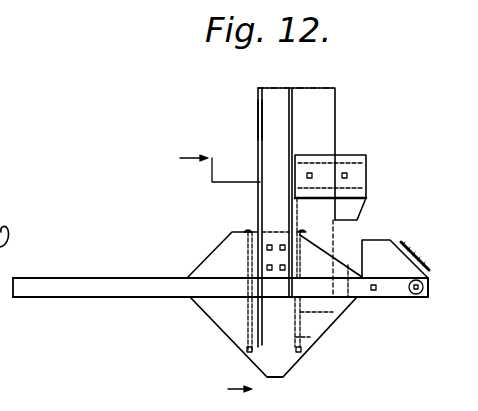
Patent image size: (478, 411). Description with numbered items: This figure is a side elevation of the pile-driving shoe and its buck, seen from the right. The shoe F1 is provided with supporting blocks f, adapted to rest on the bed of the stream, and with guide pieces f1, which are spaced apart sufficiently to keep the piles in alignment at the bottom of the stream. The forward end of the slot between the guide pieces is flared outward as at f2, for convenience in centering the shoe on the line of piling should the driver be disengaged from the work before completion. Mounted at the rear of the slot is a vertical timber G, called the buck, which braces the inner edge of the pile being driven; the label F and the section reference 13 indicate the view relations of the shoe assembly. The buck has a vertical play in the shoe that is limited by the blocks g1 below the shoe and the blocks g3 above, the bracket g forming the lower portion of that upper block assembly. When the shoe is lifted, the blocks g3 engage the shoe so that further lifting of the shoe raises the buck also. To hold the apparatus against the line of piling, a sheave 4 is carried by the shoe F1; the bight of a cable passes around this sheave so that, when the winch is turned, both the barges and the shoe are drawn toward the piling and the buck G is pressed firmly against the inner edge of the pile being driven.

The buck G is at (335, 113).
The column flange F is at (260, 123).
The section line 13 is at (226, 268).
The blocks above the shoe g3 is at (363, 168).
The bracket lower portion g is at (360, 208).
The shoe F1 is at (230, 236).
The blocks below the shoe g1 is at (317, 333).
The supporting blocks f is at (220, 323).
The guide pieces f1 is at (93, 277).
The flared forward end of slot f2 is at (397, 268).
The sheave 4 is at (413, 244).